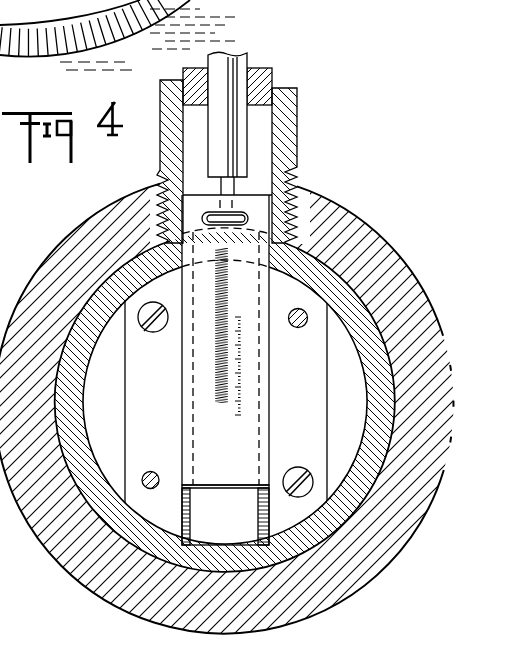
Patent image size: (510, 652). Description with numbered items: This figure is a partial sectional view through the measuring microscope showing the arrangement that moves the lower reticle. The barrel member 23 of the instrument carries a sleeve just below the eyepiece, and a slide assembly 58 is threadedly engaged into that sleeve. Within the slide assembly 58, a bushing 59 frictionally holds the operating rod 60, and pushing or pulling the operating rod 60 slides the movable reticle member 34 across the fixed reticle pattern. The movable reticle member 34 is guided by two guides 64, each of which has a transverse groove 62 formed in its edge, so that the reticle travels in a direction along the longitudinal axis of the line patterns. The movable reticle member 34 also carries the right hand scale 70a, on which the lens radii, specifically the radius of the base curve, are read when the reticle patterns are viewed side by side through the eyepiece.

The barrel member 23 is at (351, 307).
The movable reticle member 34 is at (202, 366).
The slide assembly 58 is at (262, 131).
The bushing 59 is at (257, 80).
The operating rod 60 is at (236, 63).
The transverse grooves 62 is at (262, 505).
The guides 64 is at (128, 372).
The right hand scale 70a is at (229, 410).